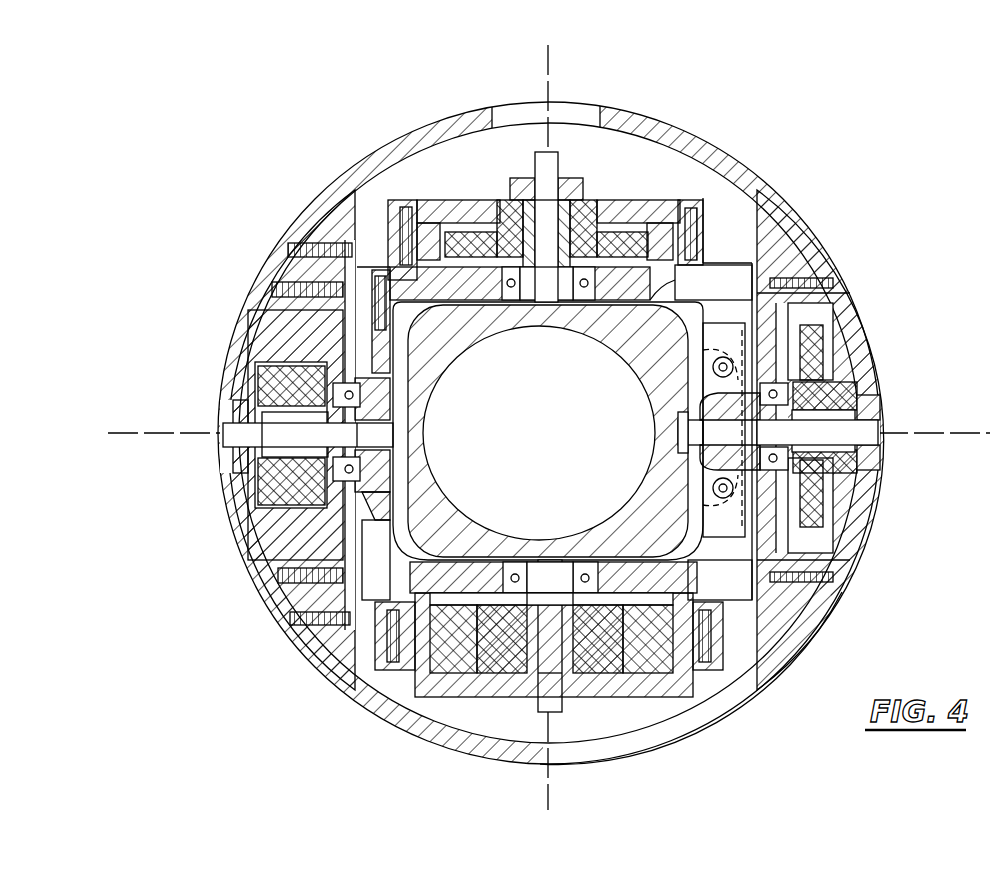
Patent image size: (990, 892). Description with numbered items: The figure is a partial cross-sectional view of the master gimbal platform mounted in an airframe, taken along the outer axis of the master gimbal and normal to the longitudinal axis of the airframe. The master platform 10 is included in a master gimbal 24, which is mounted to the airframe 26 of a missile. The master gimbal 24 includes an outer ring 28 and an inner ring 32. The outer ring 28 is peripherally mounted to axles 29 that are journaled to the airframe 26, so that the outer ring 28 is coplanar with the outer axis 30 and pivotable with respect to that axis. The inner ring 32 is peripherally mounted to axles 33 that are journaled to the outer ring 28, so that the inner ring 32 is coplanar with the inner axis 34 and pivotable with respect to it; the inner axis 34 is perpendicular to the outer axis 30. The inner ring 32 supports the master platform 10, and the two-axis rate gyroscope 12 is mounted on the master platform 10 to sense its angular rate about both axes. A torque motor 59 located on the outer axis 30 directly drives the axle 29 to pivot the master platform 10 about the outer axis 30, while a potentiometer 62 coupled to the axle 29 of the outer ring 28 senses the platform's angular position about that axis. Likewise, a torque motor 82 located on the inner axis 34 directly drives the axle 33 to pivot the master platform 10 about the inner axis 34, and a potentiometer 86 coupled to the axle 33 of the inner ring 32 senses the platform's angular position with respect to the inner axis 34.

The master platform 10 is at (694, 287).
The two-axis rate gyroscope 12 is at (557, 414).
The master gimbal 24 is at (447, 172).
The airframe 26 is at (660, 118).
The outer ring 28 is at (744, 262).
The axles 29 is at (222, 440).
The outer axis 30 is at (972, 432).
The inner ring 32 is at (696, 556).
The axles 33 is at (535, 162).
The inner axis 34 is at (549, 78).
The torque motor 59 is at (258, 512).
The potentiometer 62 is at (882, 380).
The torque motor 82 is at (484, 670).
The potentiometer 86 is at (600, 212).